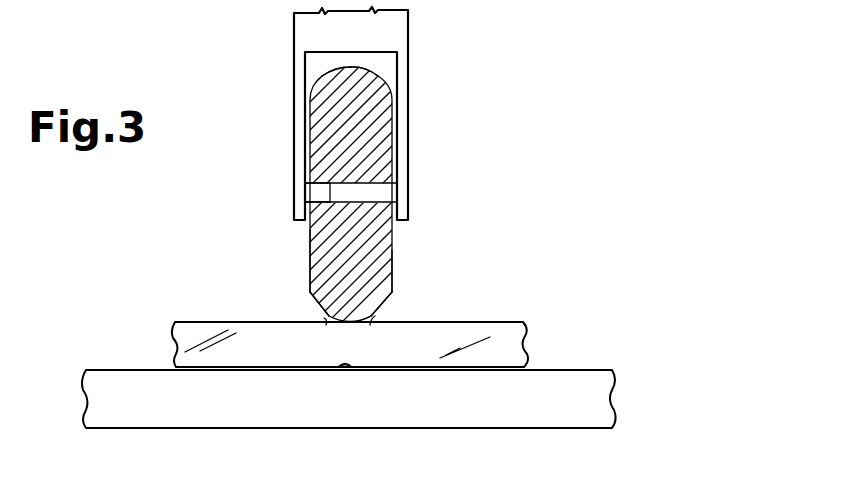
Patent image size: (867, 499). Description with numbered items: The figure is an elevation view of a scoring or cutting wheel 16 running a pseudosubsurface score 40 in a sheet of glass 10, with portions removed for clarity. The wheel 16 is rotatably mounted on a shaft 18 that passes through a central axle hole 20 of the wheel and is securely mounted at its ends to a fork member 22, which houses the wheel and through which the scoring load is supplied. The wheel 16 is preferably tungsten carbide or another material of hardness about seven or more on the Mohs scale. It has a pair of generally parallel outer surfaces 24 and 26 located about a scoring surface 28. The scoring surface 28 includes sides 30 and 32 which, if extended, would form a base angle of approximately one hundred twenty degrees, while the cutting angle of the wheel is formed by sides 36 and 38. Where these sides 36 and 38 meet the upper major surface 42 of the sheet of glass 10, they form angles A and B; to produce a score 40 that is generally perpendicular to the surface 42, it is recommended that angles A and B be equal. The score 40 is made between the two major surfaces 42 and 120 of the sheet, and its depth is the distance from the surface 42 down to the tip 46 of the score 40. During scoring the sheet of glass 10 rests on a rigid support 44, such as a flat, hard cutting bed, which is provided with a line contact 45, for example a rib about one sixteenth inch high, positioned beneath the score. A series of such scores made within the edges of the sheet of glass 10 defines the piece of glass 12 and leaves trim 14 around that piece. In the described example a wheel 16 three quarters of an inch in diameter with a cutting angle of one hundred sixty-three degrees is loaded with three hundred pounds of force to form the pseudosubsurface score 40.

The sheet of glass 10 is at (153, 338).
The piece of glass 12 is at (198, 355).
The trim 14 is at (474, 360).
The scoring wheel 16 is at (410, 256).
The shaft 18 is at (385, 192).
The central axle hole 20 is at (317, 202).
The fork member 22 is at (408, 88).
The outer surface 24 is at (392, 268).
The outer surface 26 is at (308, 270).
The scoring surface 28 is at (411, 309).
The side of scoring surface 30 is at (380, 314).
The side of scoring surface 32 is at (312, 308).
The side forming cutting angle 36 is at (373, 67).
The side forming cutting angle 38 is at (336, 67).
The pseudosubsurface score 40 is at (351, 326).
The major surface of sheet of glass 42 is at (506, 322).
The rigid support 44 is at (644, 384).
The line contact 45 is at (343, 368).
The tip of the score 46 is at (345, 362).
The major surface of sheet of glass 120 is at (445, 368).
The angle A is at (337, 304).
The angle B is at (369, 304).